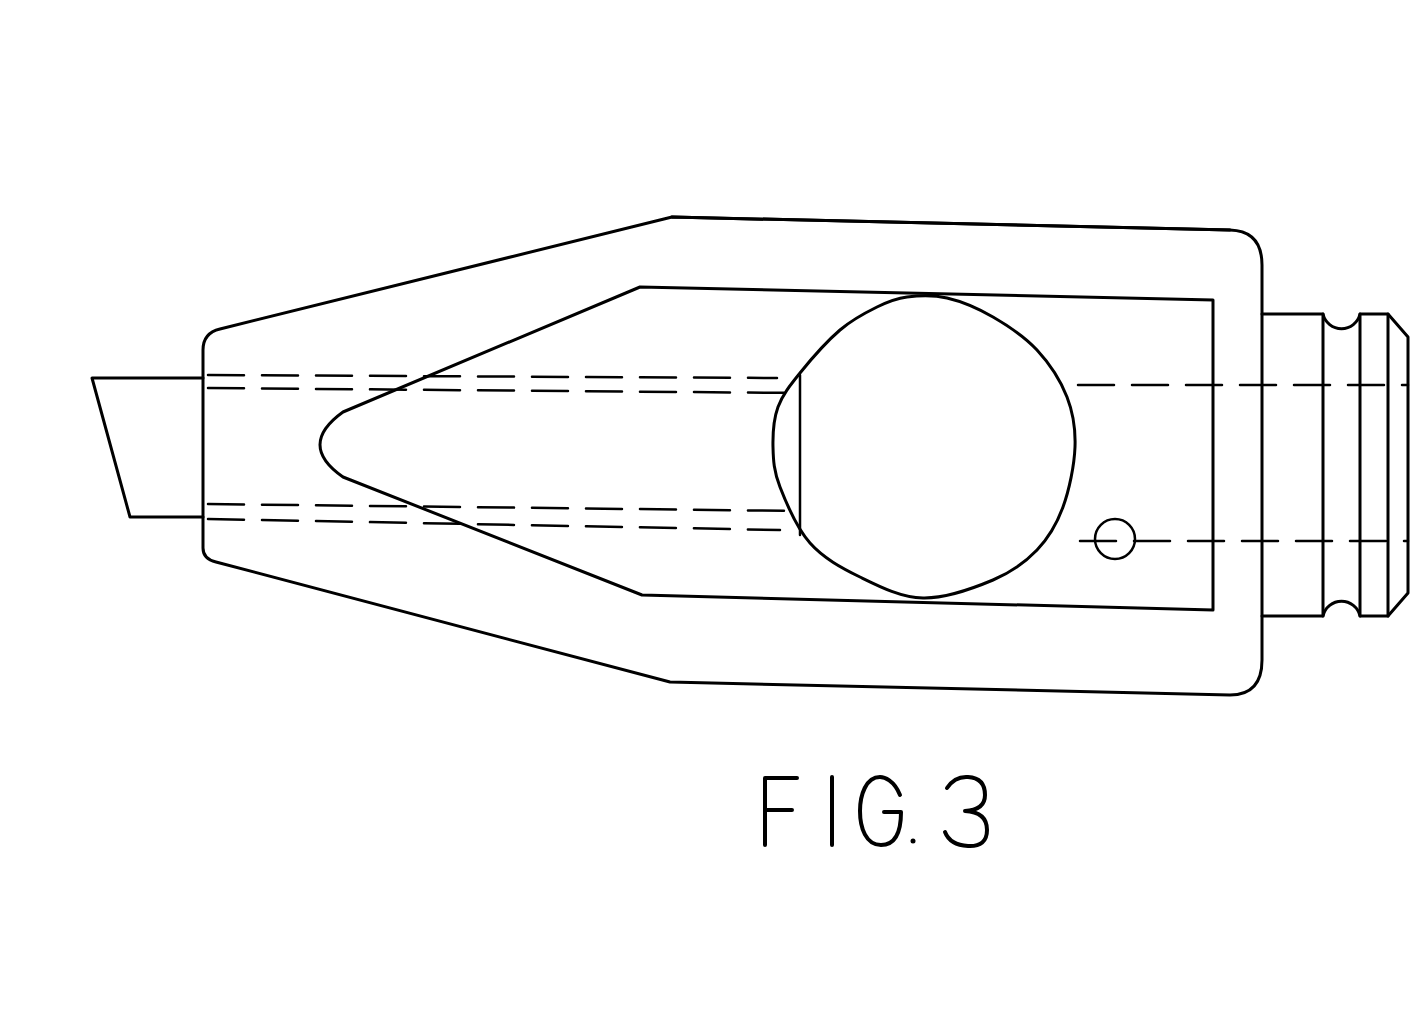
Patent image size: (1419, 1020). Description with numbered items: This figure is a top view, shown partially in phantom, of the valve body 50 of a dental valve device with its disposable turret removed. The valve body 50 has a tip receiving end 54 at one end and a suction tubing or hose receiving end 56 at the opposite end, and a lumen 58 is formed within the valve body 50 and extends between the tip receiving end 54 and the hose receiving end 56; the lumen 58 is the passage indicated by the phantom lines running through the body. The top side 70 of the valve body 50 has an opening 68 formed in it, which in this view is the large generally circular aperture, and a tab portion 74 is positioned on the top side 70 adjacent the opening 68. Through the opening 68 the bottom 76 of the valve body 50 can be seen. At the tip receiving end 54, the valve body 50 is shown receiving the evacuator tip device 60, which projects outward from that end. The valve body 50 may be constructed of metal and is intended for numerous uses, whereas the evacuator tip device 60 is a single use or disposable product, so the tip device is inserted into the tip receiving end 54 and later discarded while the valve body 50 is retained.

The valve body 50 is at (703, 174).
The tip receiving end 54 is at (181, 311).
The suction tubing or hose receiving end 56 is at (1370, 260).
The lumen 58 is at (1123, 414).
The evacuator tip device 60 is at (151, 487).
The opening 68 is at (815, 345).
The top side 70 is at (965, 258).
The tab portion 74 is at (1120, 548).
The bottom 76 is at (943, 570).